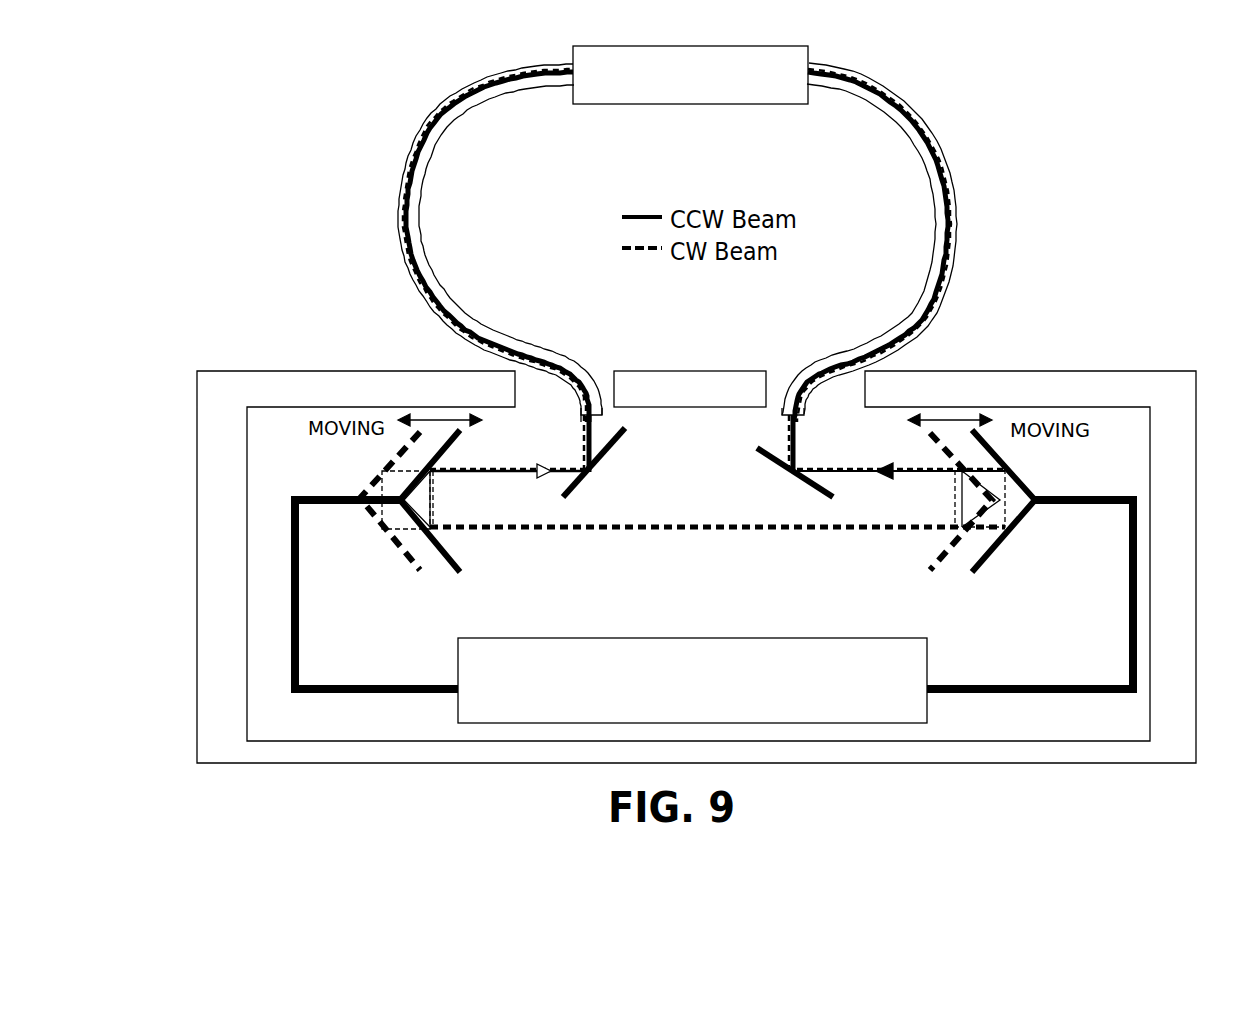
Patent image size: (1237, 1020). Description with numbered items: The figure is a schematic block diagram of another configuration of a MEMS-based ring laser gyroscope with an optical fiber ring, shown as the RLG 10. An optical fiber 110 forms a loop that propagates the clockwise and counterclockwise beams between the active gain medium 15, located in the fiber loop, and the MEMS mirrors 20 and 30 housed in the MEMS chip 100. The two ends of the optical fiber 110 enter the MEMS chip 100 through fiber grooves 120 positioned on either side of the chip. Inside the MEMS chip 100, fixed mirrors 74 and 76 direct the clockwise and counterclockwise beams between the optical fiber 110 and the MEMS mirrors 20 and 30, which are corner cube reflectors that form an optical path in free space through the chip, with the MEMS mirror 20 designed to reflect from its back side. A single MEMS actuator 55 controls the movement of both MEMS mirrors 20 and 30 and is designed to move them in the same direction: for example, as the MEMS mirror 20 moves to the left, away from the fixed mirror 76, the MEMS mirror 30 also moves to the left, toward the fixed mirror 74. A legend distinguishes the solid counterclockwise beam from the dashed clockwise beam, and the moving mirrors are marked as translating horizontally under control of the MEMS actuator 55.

The RLG 10 is at (1108, 120).
The active gain medium 15 is at (680, 81).
The MEMS mirror 20 is at (452, 557).
The MEMS mirror 30 is at (1007, 547).
The MEMS actuator 55 is at (682, 700).
The fixed mirror 74 is at (788, 473).
The fixed mirror 76 is at (593, 472).
The MEMS chip 100 is at (1162, 400).
The optical fiber 110 is at (927, 117).
The fiber grooves 120 is at (600, 368).